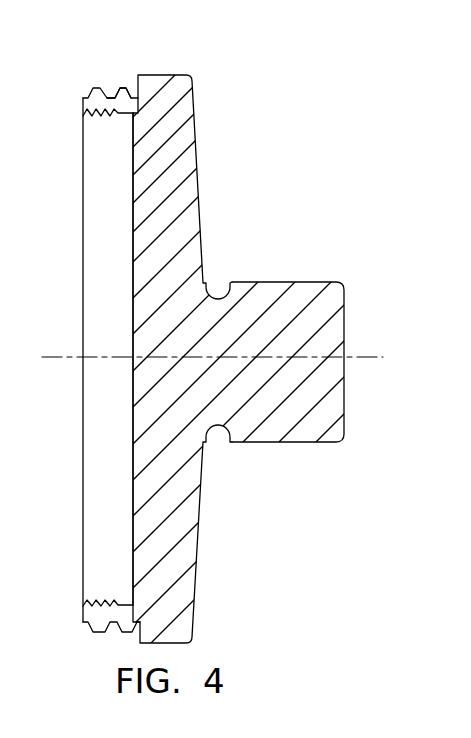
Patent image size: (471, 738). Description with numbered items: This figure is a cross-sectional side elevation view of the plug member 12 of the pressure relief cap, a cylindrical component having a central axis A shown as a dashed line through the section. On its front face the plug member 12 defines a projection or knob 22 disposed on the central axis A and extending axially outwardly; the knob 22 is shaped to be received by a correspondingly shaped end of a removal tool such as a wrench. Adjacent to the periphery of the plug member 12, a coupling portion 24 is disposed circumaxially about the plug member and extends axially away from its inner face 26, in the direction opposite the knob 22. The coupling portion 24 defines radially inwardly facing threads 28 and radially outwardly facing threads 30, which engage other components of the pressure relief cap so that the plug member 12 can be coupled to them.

The plug member 12 is at (263, 147).
The knob 22 is at (278, 282).
The coupling portion 24 is at (94, 78).
The inner face 26 is at (133, 288).
The radially inwardly facing threads 28 is at (87, 114).
The radially outwardly facing threads 30 is at (118, 87).
The central axis A is at (351, 357).